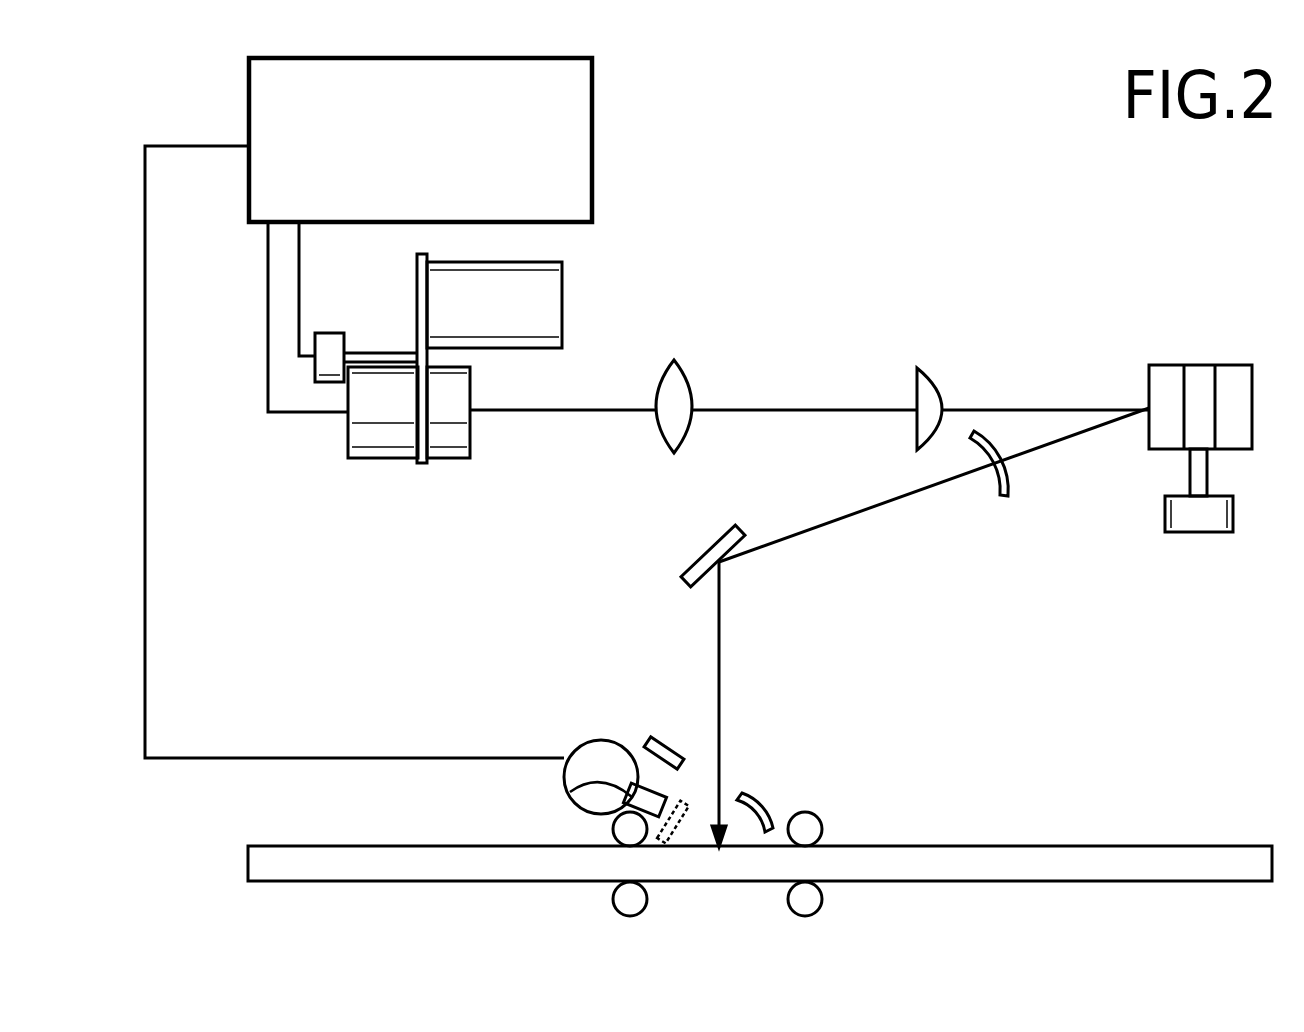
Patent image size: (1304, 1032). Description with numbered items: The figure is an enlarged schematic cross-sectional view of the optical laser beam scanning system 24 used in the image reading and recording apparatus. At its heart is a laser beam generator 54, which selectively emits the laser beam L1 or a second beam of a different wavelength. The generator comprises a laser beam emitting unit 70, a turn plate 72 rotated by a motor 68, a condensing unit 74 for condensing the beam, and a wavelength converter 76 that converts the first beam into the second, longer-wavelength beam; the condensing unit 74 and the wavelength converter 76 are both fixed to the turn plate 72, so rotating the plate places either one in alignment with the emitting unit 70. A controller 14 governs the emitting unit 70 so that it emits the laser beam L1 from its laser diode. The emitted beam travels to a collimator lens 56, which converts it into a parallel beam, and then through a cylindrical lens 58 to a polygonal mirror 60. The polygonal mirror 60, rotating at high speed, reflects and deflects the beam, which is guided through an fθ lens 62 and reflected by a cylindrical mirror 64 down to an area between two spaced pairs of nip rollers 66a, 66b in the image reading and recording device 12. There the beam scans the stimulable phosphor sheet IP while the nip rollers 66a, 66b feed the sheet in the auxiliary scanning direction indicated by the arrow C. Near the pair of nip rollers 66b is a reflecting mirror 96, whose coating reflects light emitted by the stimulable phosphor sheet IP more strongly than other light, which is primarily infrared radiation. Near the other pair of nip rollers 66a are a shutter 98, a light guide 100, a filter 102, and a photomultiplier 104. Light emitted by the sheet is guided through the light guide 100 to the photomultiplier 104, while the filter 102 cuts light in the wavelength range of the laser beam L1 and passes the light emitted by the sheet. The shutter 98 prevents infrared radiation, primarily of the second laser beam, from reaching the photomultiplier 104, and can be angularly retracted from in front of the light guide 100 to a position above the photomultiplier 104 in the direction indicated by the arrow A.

The controller 14 is at (592, 108).
The optical laser beam scanning system 24 is at (972, 177).
The laser beam generator 54 is at (322, 464).
The collimator lens 56 is at (680, 383).
The cylindrical lens 58 is at (928, 383).
The polygonal mirror 60 is at (1236, 389).
The fθ lens 62 is at (985, 497).
The cylindrical mirror 64 is at (703, 555).
The motor 68 is at (338, 348).
The laser beam emitting unit 70 is at (382, 435).
The turn plate 72 is at (418, 463).
The condensing unit 74 is at (460, 395).
The wavelength converter 76 is at (553, 300).
The reflecting mirror 96 is at (752, 805).
The shutter 98 is at (670, 757).
The light guide 100 is at (665, 813).
The filter 102 is at (570, 793).
The photomultiplier 104 is at (597, 750).
The pair of nip rollers 66a is at (620, 896).
The pair of nip rollers 66b is at (830, 895).
The image reading and recording device 12 is at (748, 732).
The stimulable phosphor sheet IP is at (1147, 857).
The auxiliary scanning direction C is at (1055, 823).
The direction of shutter retraction A is at (702, 790).
The laser beam L1 is at (573, 412).